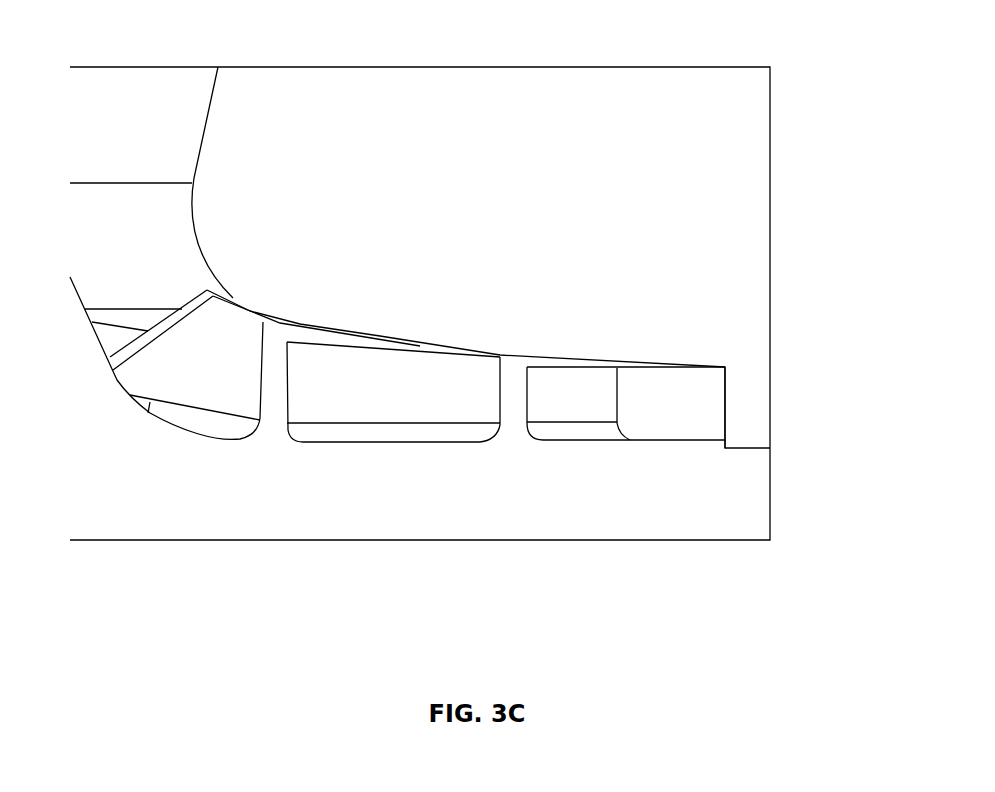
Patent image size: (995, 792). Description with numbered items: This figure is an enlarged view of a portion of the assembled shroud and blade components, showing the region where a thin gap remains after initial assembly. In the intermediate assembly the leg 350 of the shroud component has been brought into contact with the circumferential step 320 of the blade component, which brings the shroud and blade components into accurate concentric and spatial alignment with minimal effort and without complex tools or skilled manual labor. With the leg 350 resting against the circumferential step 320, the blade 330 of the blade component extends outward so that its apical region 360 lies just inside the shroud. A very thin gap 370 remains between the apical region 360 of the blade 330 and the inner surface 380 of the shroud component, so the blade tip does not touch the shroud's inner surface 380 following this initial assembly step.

The circumferential step 320 is at (740, 446).
The blade 330 is at (273, 385).
The leg 350 is at (745, 420).
The apical region 360 is at (230, 300).
The gap 370 is at (230, 300).
The inner surface 380 is at (355, 337).